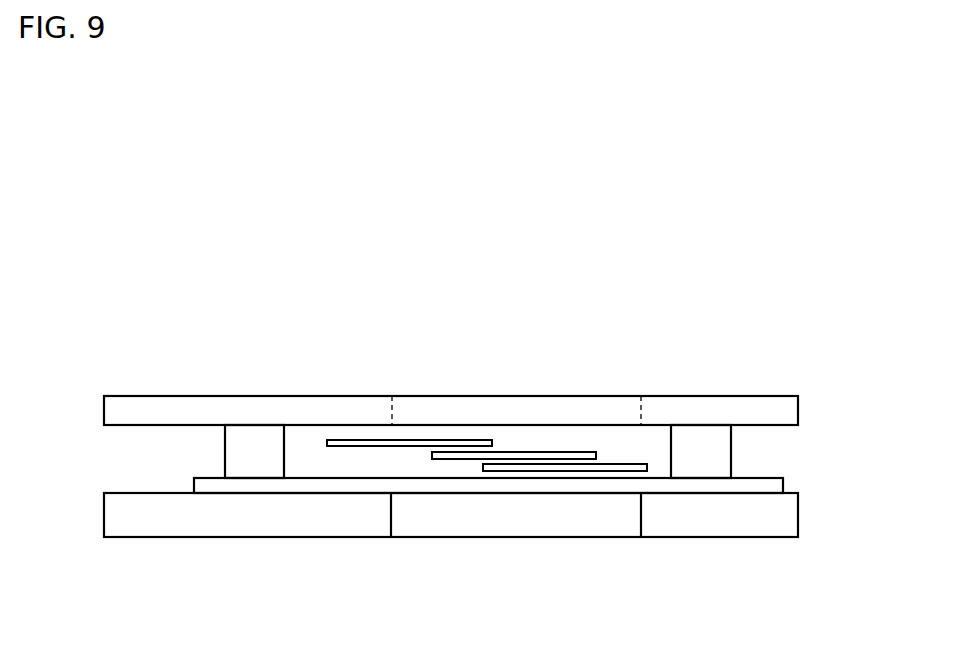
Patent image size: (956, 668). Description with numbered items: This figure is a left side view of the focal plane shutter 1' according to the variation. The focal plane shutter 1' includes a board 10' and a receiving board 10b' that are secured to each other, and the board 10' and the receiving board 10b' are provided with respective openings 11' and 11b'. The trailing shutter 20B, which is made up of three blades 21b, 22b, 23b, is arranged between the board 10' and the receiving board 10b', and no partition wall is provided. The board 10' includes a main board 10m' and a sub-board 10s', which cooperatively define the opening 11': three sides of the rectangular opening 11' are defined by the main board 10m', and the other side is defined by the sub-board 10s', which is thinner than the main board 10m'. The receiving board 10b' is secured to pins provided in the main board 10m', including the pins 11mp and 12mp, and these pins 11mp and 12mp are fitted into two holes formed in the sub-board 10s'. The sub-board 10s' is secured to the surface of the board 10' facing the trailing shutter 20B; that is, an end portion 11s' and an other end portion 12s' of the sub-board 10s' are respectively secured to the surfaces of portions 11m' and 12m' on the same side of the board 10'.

The focal plane shutter 1' is at (462, 418).
The board 10' is at (451, 567).
The receiving board 10b' is at (468, 372).
The main board 10m' is at (648, 552).
The sub-board 10s' is at (360, 542).
The opening 11' is at (516, 567).
The opening 11b' is at (652, 373).
The portion 11m' is at (719, 573).
The pin 11mp is at (722, 448).
The end portion 11s' is at (530, 488).
The portion 12m' is at (247, 561).
The pin 12mp is at (233, 452).
The other end portion 12s' is at (257, 542).
The trailing shutter 20B is at (612, 291).
The blade 21b is at (610, 464).
The blade 22b is at (540, 452).
The blade 23b is at (415, 440).